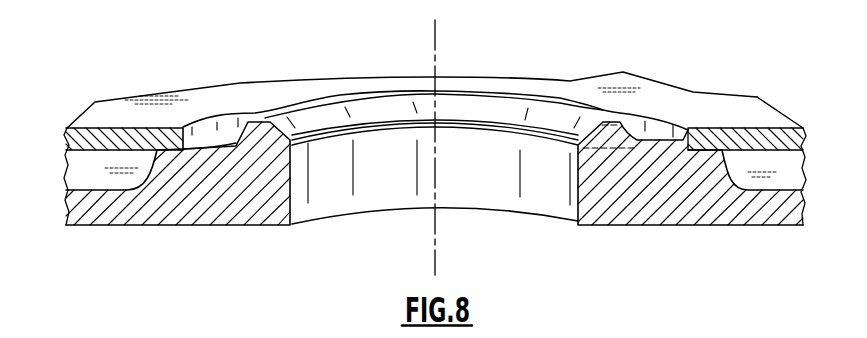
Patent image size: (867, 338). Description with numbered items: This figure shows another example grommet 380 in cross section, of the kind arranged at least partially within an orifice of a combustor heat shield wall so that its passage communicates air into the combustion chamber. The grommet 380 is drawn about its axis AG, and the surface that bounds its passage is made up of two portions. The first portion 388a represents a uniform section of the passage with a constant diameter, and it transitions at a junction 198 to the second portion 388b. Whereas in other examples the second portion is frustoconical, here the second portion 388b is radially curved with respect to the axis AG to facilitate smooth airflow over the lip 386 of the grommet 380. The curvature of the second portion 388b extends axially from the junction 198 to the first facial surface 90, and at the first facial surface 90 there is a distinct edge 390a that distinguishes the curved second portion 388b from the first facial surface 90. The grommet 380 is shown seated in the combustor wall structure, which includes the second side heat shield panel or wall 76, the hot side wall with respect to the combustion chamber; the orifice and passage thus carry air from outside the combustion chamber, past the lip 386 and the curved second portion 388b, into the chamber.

The second side heat shield panel or wall 76 is at (676, 122).
The first facial surface 90 is at (265, 115).
The junction 198 is at (578, 146).
The grommet 380 is at (240, 235).
The lip 386 is at (610, 118).
The first portion 388a is at (329, 160).
The second portion 388b is at (516, 125).
The distinct edge 390a is at (298, 111).
The axis AG is at (435, 108).